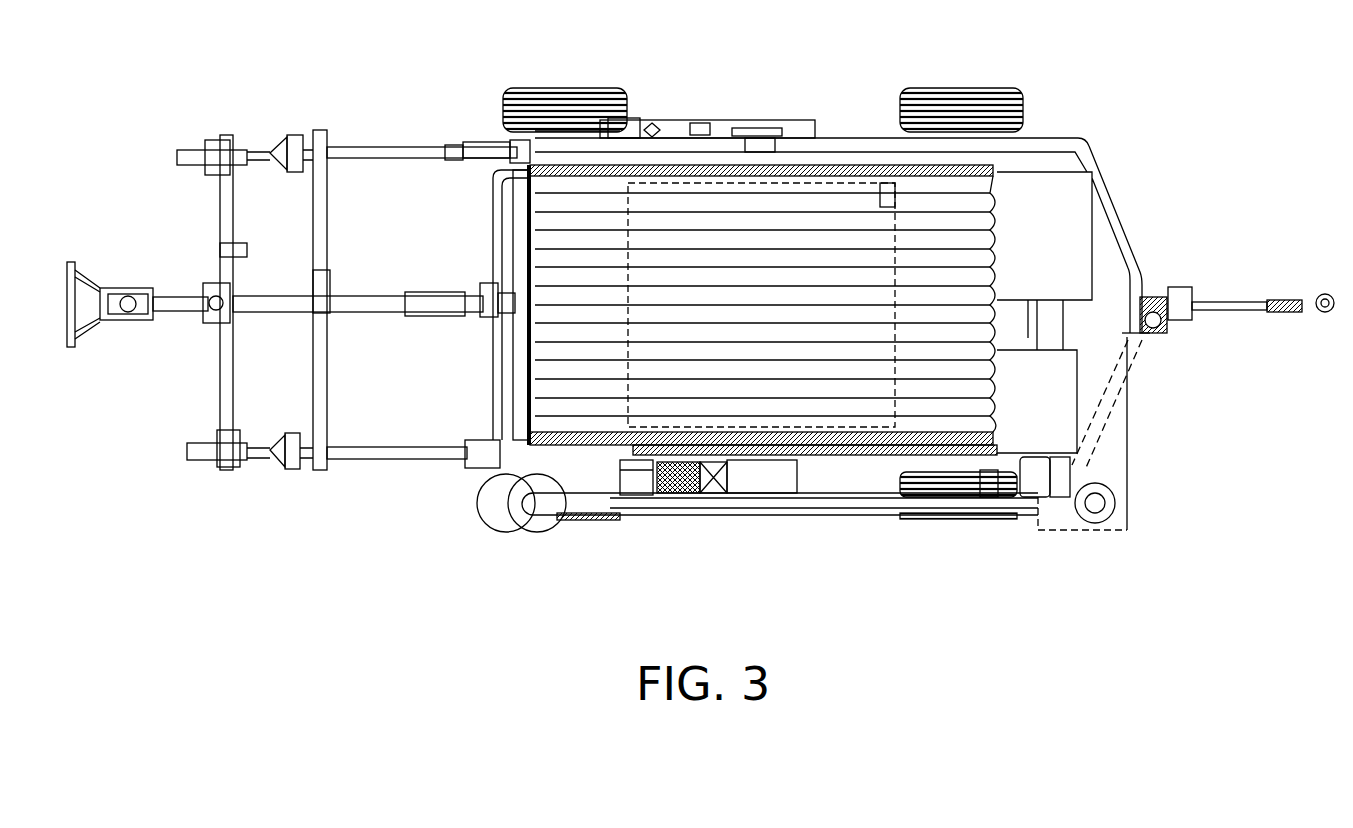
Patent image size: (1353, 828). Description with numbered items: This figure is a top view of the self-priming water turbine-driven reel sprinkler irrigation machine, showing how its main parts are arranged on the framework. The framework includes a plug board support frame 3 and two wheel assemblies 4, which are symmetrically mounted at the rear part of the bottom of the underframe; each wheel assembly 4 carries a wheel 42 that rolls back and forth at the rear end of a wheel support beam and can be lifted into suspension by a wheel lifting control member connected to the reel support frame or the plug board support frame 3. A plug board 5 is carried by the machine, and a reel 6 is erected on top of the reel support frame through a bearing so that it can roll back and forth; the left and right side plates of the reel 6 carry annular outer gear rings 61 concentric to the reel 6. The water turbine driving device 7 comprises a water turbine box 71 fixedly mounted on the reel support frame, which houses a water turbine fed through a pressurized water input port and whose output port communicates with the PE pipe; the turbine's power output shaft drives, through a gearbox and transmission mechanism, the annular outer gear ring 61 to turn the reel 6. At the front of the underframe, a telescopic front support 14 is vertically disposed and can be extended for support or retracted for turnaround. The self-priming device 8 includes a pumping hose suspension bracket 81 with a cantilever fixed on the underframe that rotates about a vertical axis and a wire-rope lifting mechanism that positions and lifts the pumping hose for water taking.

The plug board support frame 3 is at (580, 143).
The wheel assembly 4 is at (590, 100).
The wheel 42 is at (605, 115).
The plug board 5 is at (350, 148).
The reel 6 is at (917, 163).
The water turbine driving device 7 is at (1043, 173).
The self-priming device 8 is at (1033, 413).
The pumping hose suspension bracket 81 is at (1097, 502).
The telescopic front support 14 is at (1150, 337).
The annular outer gear ring 61 is at (893, 453).
The water turbine box 71 is at (763, 482).